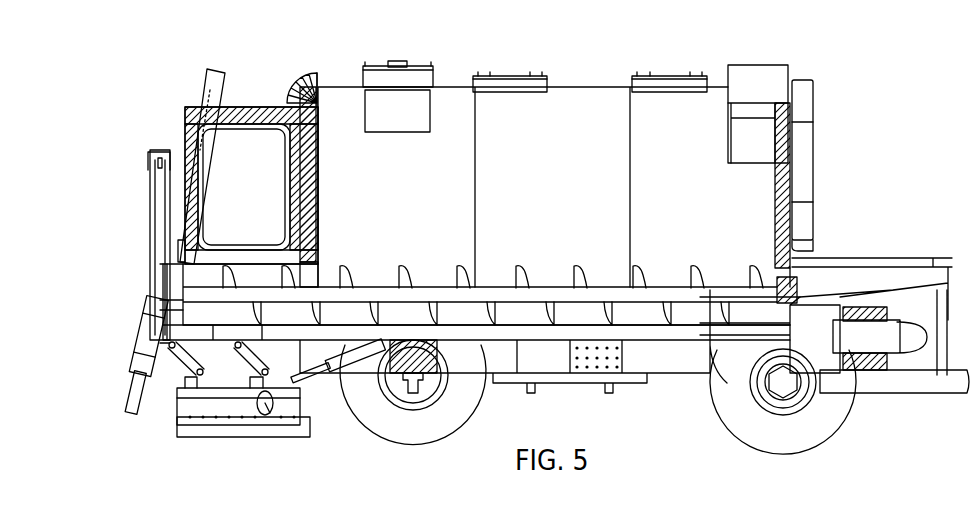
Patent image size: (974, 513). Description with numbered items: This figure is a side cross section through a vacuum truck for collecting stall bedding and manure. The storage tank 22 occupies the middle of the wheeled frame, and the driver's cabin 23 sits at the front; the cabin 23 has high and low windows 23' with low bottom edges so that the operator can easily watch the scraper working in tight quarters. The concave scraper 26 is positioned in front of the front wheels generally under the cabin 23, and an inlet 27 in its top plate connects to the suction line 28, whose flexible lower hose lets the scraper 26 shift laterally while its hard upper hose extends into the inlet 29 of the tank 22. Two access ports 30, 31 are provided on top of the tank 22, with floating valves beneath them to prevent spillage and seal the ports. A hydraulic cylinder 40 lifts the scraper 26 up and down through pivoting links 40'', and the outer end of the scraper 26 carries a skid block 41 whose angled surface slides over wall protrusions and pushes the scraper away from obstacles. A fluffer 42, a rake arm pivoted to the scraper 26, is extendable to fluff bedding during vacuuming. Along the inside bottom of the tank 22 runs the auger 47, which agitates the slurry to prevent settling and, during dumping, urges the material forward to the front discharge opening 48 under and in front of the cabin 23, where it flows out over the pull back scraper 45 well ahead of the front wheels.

The storage tank 22 is at (580, 87).
The driver's cabin 23 is at (239, 152).
The high and low windows 23' is at (210, 169).
The suction line 28 is at (303, 77).
The tank inlet 29 is at (413, 65).
The access port 30 is at (517, 75).
The access port 31 is at (675, 75).
The fluffer 42 is at (217, 70).
The auger 47 is at (497, 283).
The front discharge opening 48 is at (182, 275).
The pull back scraper 45 is at (123, 400).
The skid block 41 is at (172, 408).
The scraper 26 is at (180, 437).
The inlet 27 is at (275, 412).
The hydraulic cylinder 40 is at (338, 405).
The pivoting links 40'' is at (226, 428).